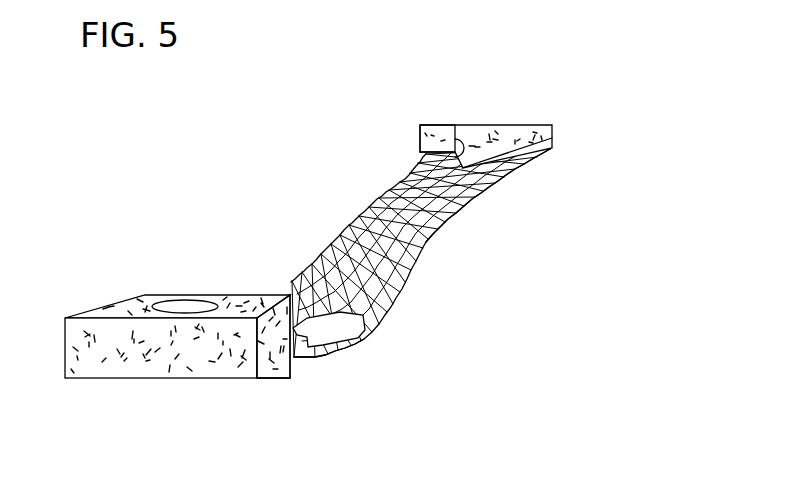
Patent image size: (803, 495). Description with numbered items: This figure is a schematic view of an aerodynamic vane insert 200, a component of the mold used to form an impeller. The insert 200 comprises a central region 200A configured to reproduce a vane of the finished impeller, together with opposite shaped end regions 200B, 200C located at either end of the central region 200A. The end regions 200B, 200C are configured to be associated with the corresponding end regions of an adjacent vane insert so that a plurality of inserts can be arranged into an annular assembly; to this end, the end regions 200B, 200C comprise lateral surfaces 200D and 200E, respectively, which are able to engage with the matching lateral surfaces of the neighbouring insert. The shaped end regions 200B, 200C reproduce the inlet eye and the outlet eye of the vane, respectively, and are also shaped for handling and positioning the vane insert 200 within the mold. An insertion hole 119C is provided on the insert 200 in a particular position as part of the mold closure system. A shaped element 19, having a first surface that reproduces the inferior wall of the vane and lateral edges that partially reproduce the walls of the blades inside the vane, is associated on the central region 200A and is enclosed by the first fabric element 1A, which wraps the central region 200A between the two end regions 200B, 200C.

The aerodynamic vane insert 200 is at (151, 107).
The central region 200A is at (408, 268).
The shaped end region 200B is at (193, 325).
The shaped end region 200C is at (515, 130).
The lateral surface 200D is at (75, 303).
The lateral surface 200E is at (425, 133).
The first fabric element 1A is at (377, 217).
The shaped element 19 is at (336, 330).
The insertion hole 119C is at (182, 310).